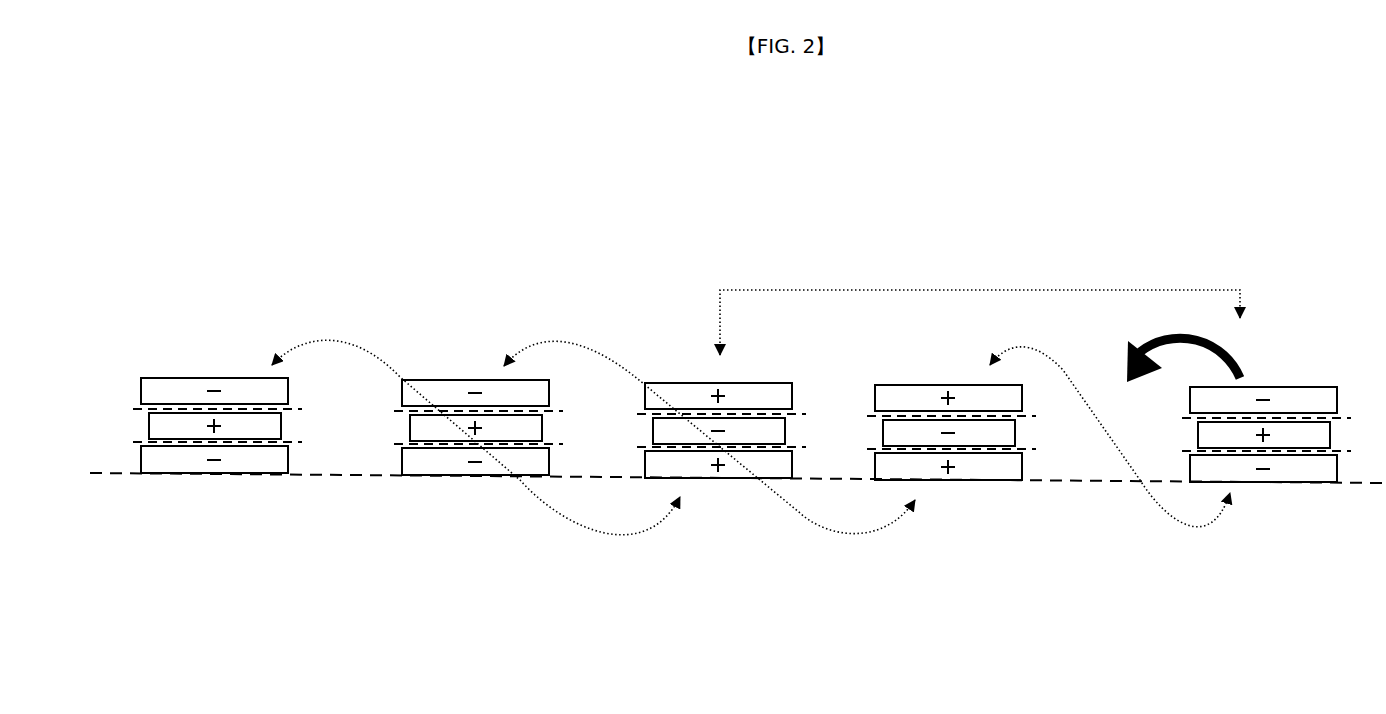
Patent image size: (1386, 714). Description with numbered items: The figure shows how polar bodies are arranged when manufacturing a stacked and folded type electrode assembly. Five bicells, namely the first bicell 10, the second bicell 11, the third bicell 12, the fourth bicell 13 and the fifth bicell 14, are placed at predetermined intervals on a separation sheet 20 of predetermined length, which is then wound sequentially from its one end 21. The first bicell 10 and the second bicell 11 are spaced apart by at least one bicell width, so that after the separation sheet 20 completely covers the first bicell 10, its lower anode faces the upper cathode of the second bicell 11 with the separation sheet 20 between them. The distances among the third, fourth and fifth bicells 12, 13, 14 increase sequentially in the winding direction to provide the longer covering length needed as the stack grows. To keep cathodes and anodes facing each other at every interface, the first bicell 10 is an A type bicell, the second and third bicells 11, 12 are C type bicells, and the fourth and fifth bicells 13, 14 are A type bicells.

The first bicell 10 is at (1275, 385).
The second bicell 11 is at (910, 385).
The third bicell 12 is at (688, 375).
The fourth bicell 13 is at (452, 372).
The fifth bicell 14 is at (254, 372).
The separation sheet 20 is at (190, 478).
The one end 21 is at (1345, 486).